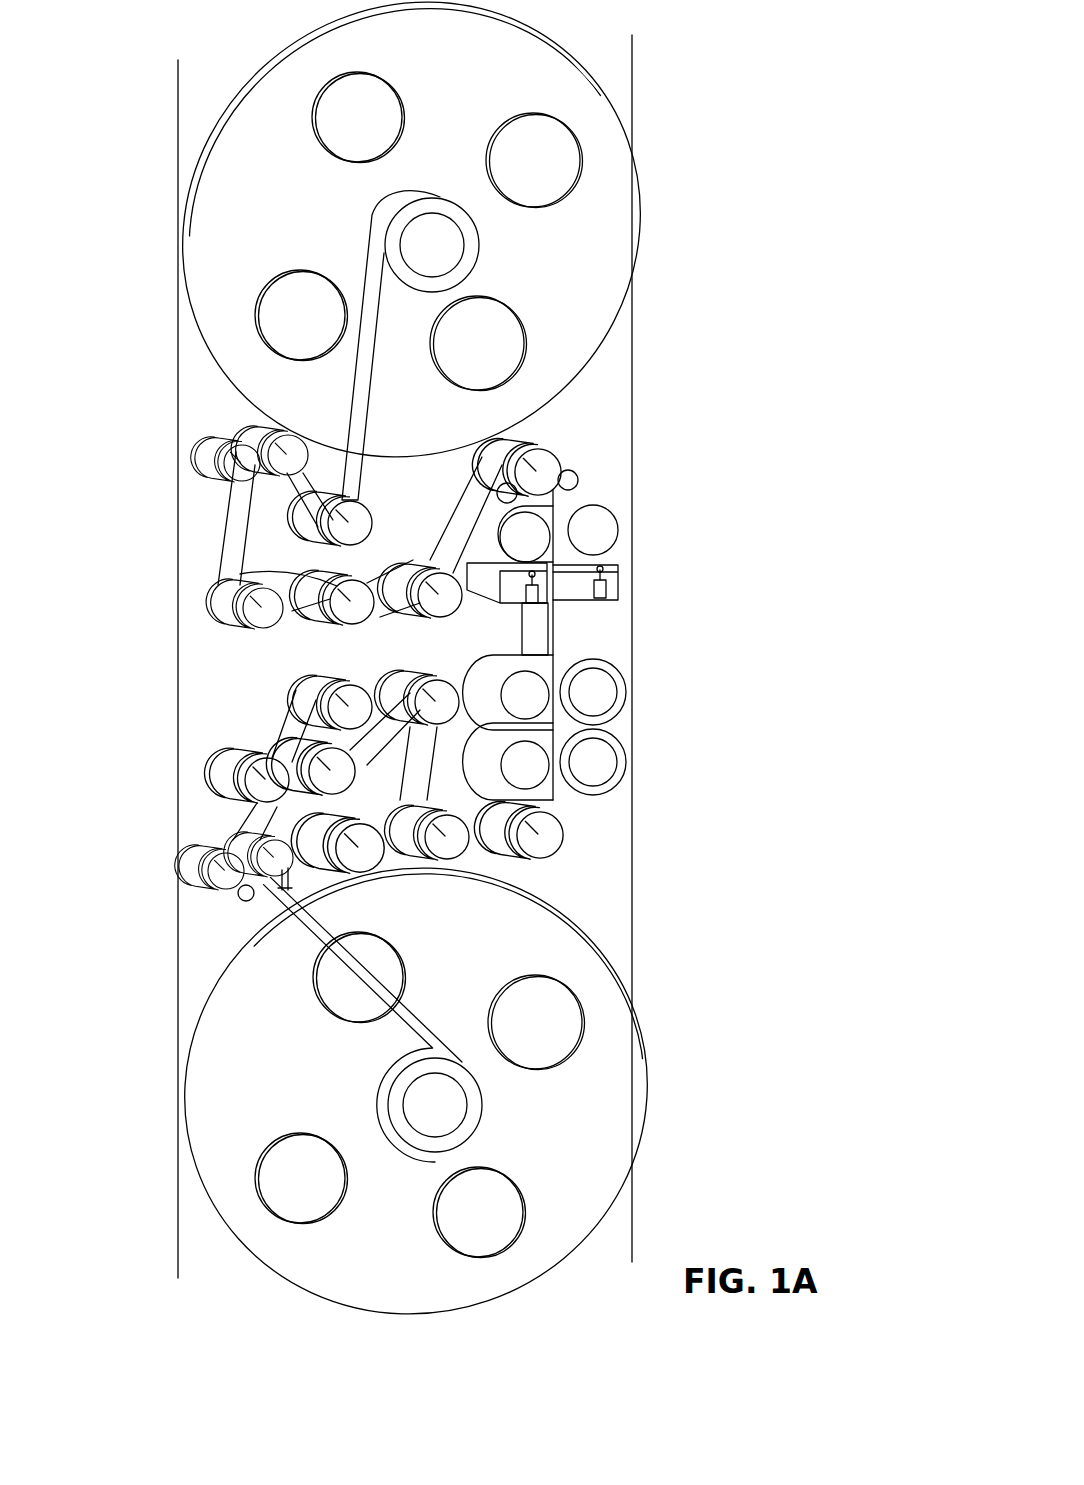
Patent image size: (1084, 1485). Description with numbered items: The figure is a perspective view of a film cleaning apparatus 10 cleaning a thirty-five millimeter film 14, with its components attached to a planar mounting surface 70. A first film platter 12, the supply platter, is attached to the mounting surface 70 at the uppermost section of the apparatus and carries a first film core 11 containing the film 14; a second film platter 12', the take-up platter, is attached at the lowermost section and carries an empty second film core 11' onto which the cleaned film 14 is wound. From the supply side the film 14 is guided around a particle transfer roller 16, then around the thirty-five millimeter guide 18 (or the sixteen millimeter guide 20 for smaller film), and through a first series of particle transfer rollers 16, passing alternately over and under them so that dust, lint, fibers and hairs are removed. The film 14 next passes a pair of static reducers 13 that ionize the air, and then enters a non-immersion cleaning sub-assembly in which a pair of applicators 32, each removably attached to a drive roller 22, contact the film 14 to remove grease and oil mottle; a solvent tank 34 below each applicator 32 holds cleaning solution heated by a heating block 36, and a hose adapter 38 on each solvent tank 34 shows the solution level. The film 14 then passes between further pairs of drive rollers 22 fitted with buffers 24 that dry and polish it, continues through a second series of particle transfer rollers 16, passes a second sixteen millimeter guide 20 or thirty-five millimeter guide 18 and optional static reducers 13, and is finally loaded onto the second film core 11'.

The film cleaning apparatus 10 is at (640, 392).
The first film core 11 is at (572, 255).
The second film core 11' is at (577, 1105).
The first film platter 12 is at (428, 275).
The second film platter 12' is at (441, 1091).
The static reducer 13 is at (578, 478).
The film 14 is at (366, 290).
The particle transfer roller 16 is at (555, 465).
The 35 mm guide 18 is at (288, 435).
The 16 mm guide 20 is at (228, 440).
The drive roller 22 is at (560, 545).
The buffer 24 is at (600, 705).
The applicator 32 is at (595, 505).
The solvent tank 34 is at (612, 600).
The heating block 36 is at (540, 606).
The hose adapter 38 is at (618, 568).
The mounting surface 70 is at (415, 500).